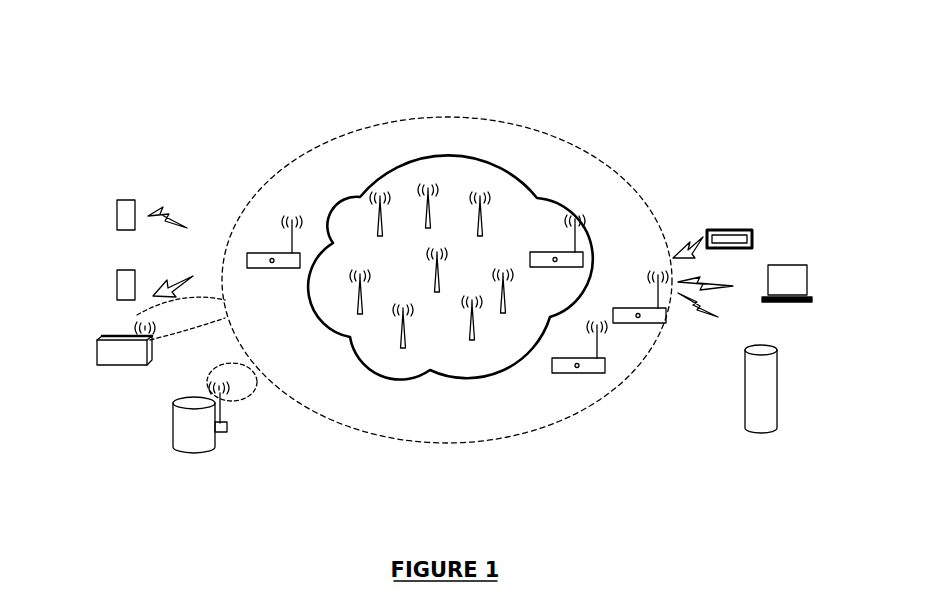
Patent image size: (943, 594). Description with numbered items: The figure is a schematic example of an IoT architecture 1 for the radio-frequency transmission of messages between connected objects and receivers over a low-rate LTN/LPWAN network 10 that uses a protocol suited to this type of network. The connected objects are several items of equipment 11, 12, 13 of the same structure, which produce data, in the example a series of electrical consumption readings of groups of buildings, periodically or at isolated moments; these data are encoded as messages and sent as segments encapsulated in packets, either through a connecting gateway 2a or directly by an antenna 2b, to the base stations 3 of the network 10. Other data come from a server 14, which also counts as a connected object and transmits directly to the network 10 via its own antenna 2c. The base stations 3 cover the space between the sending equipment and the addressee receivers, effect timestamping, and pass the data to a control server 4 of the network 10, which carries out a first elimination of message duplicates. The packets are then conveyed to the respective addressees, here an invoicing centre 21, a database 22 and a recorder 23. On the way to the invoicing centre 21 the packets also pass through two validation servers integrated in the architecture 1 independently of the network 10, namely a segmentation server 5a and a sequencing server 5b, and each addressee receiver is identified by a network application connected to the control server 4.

The IoT architecture 1 is at (487, 121).
The low-rate LTN/LPWAN network 10 is at (377, 178).
The base stations 3 is at (480, 238).
The control server 4 is at (562, 252).
The connecting gateway 2a is at (265, 252).
The antenna 2b is at (153, 337).
The antenna 2c is at (225, 423).
The item of equipment 11 is at (127, 200).
The item of equipment 12 is at (118, 270).
The item of equipment 13 is at (113, 355).
The server 14 is at (183, 428).
The segmentation server 5a is at (568, 375).
The sequencing server 5b is at (625, 322).
The invoicing centre 21 is at (738, 230).
The database 22 is at (800, 265).
The recorder 23 is at (743, 413).